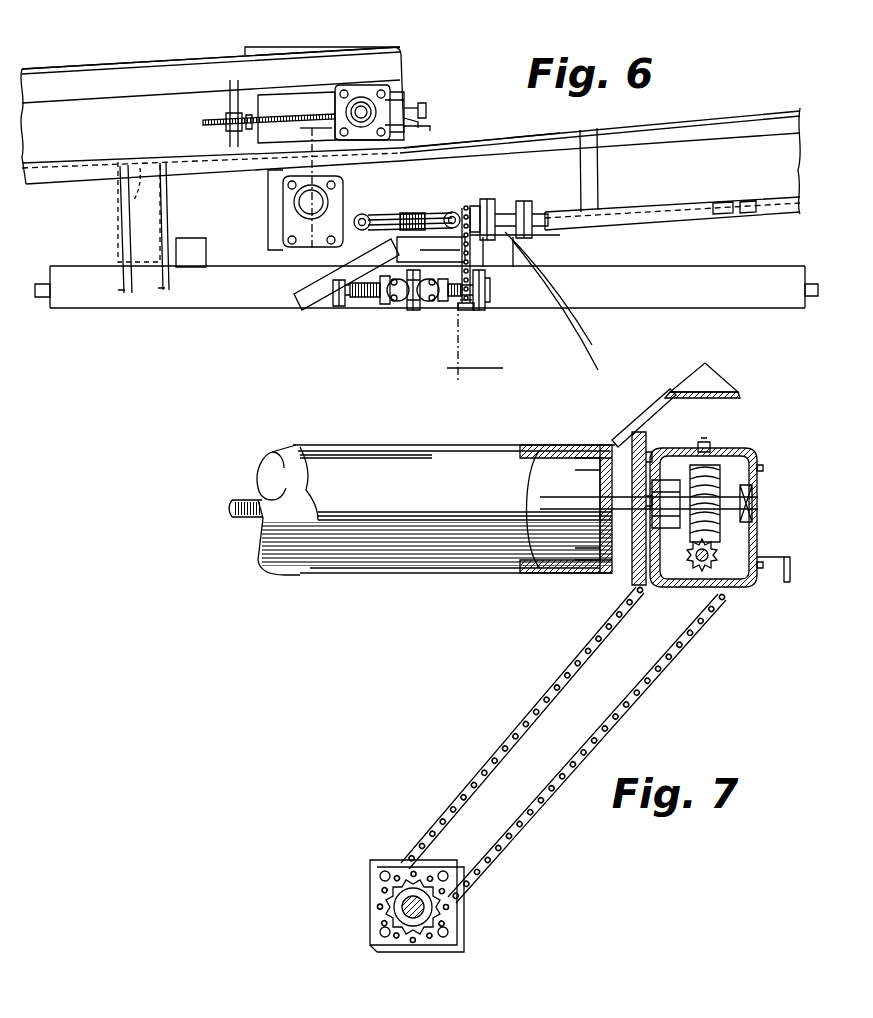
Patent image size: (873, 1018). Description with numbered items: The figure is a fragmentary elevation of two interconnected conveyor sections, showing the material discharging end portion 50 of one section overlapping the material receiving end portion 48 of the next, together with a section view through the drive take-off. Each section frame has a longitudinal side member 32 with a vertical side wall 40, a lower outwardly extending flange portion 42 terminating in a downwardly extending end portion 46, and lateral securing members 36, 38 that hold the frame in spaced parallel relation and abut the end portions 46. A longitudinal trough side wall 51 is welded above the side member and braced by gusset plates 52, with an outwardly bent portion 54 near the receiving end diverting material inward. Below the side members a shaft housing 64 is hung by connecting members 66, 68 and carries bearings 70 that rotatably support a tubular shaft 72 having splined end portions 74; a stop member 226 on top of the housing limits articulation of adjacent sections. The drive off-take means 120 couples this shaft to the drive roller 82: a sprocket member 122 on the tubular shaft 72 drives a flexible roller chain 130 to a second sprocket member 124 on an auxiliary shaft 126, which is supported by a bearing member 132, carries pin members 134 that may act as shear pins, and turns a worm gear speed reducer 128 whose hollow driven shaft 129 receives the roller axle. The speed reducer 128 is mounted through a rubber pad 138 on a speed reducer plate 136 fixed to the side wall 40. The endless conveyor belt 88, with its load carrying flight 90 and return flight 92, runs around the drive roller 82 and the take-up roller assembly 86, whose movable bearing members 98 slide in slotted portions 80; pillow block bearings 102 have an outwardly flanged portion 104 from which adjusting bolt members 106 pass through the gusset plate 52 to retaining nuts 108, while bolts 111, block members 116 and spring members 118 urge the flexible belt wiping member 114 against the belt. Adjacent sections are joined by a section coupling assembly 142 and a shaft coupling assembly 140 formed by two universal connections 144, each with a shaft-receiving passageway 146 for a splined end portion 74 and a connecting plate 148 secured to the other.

In FIG. 6, the longitudinal side member 32 is at (82, 58).
In FIG. 6, the lateral securing member 36 is at (559, 298).
In FIG. 6, the lateral securing member 38 is at (134, 200).
In FIG. 6, the vertical side wall 40 is at (50, 117).
In FIG. 6, the lower outwardly extending flange portion 42 is at (58, 166).
In FIG. 7, the lower outwardly extending flange portion 42 is at (774, 556).
In FIG. 6, the downwardly extending end portion 46 is at (93, 172).
In FIG. 7, the downwardly extending end portion 46 is at (791, 568).
In FIG. 6, the material receiving end portion 48 is at (256, 208).
In FIG. 7, the material receiving end portion 48 is at (516, 623).
In FIG. 6, the material discharging end portion 50 is at (426, 58).
In FIG. 6, the longitudinal trough side wall 51 is at (127, 72).
In FIG. 7, the longitudinal trough side wall 51 is at (656, 402).
In FIG. 6, the gusset plate 52 is at (226, 90).
In FIG. 6, the outwardly bent portion 54 is at (514, 131).
In FIG. 7, the outwardly bent portion 54 is at (700, 380).
In FIG. 6, the shaft housing 64 is at (118, 298).
In FIG. 7, the shaft housing 64 is at (461, 926).
In FIG. 6, the connecting member 66 is at (167, 216).
In FIG. 6, the connecting member 68 is at (565, 314).
In FIG. 6, the bearing 70 is at (390, 265).
In FIG. 7, the bearing 70 is at (379, 884).
In FIG. 6, the tubular shaft 72 is at (42, 284).
In FIG. 6, the splined end portion 74 is at (358, 302).
In FIG. 7, the splined end portion 74 is at (413, 912).
In FIG. 6, the slotted portion 80 is at (290, 98).
In FIG. 7, the drive roller 82 is at (278, 572).
In FIG. 6, the take-up roller assembly 86 is at (348, 86).
In FIG. 6, the endless conveyor belt 88 is at (395, 102).
In FIG. 7, the endless conveyor belt 88 is at (400, 584).
In FIG. 7, the load carrying flight 90 is at (305, 445).
In FIG. 7, the return flight 92 is at (437, 575).
In FIG. 6, the movable bearing member 98 is at (363, 88).
In FIG. 6, the pillow block bearing 102 is at (394, 98).
In FIG. 6, the outwardly flanged portion 104 is at (335, 99).
In FIG. 6, the adjusting bolt member 106 is at (205, 121).
In FIG. 6, the retaining nut 108 is at (222, 96).
In FIG. 6, the bolt 111 is at (424, 121).
In FIG. 6, the flexible belt wiping member 114 is at (432, 126).
In FIG. 6, the block member 116 is at (413, 112).
In FIG. 6, the spring member 118 is at (422, 112).
In FIG. 6, the drive off-take means 120 is at (468, 245).
In FIG. 7, the drive off-take means 120 is at (693, 652).
In FIG. 6, the sprocket member 122 is at (466, 312).
In FIG. 7, the sprocket member 122 is at (434, 870).
In FIG. 6, the second sprocket member 124 is at (474, 205).
In FIG. 6, the auxiliary shaft 126 is at (428, 214).
In FIG. 6, the speed reducer 128 is at (343, 194).
In FIG. 7, the speed reducer 128 is at (733, 590).
In FIG. 7, the hollow driven shaft 129 is at (758, 479).
In FIG. 6, the flexible roller chain 130 is at (466, 306).
In FIG. 7, the flexible roller chain 130 is at (530, 823).
In FIG. 6, the bearing member 132 is at (500, 201).
In FIG. 6, the pin member 134 is at (366, 213).
In FIG. 7, the speed reducer plate 136 is at (648, 442).
In FIG. 7, the rubber pad 138 is at (654, 446).
In FIG. 6, the shaft coupling assembly 140 is at (390, 306).
In FIG. 6, the section coupling assembly 142 is at (401, 260).
In FIG. 6, the universal connection 144 is at (404, 305).
In FIG. 6, the shaft-receiving passageway 146 is at (370, 300).
In FIG. 6, the connecting plate 148 is at (412, 310).
In FIG. 6, the stop member 226 is at (192, 258).